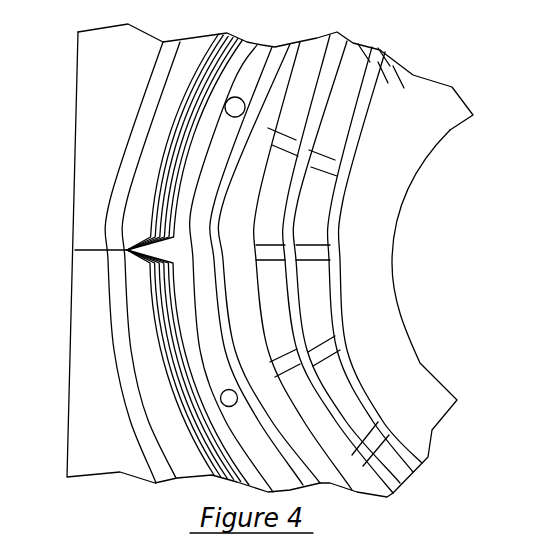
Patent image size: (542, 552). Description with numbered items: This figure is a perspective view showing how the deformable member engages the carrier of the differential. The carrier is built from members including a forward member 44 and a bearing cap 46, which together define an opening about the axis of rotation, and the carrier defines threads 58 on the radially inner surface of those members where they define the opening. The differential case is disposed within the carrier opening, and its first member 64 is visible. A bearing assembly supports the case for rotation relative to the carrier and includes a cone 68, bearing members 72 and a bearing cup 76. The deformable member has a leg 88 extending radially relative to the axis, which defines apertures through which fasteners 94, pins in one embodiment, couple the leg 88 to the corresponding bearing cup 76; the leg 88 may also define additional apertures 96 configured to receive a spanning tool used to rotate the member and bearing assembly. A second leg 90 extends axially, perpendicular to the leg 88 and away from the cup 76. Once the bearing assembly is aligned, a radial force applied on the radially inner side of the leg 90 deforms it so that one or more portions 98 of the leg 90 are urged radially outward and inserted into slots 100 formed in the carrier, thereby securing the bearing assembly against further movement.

The forward member 44 is at (93, 338).
The bearing cap 46 is at (90, 168).
The threads 58 is at (212, 453).
The first member 64 is at (390, 350).
The cone 68 is at (337, 287).
The bearing members 72 is at (313, 252).
The bearing cup 76 is at (285, 167).
The leg 88 is at (248, 88).
The leg 90 is at (228, 77).
The fasteners 94 is at (225, 106).
The apertures 96 is at (221, 393).
The portions 98 is at (160, 245).
The slots 100 is at (160, 250).